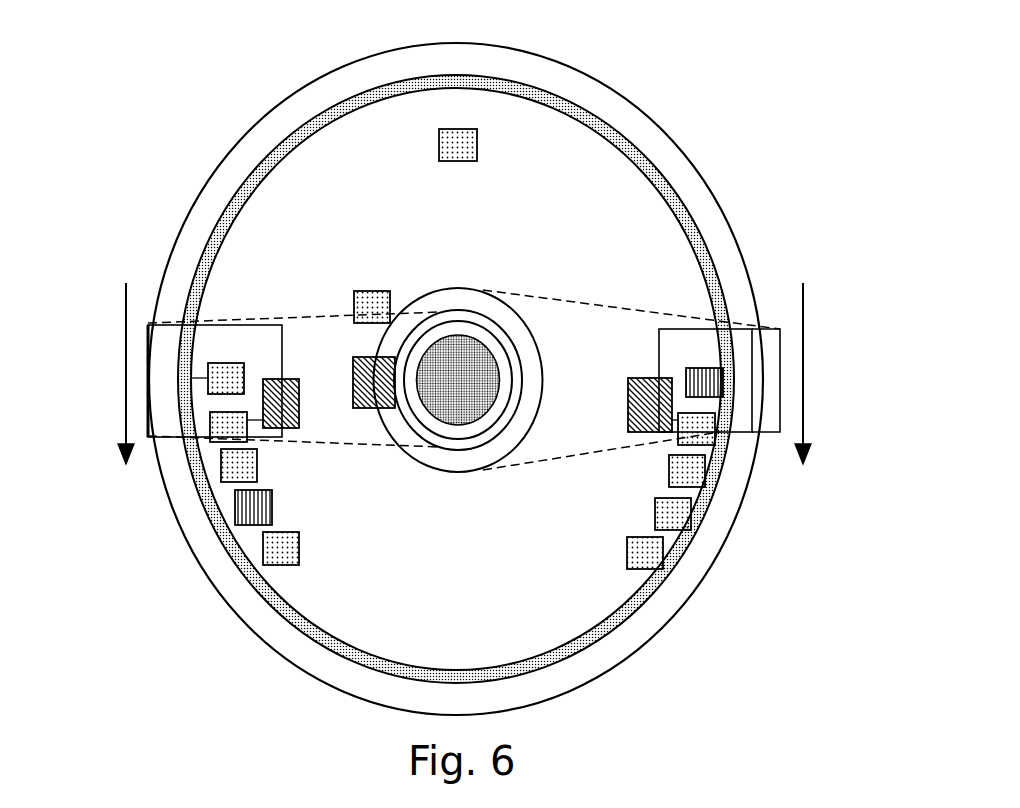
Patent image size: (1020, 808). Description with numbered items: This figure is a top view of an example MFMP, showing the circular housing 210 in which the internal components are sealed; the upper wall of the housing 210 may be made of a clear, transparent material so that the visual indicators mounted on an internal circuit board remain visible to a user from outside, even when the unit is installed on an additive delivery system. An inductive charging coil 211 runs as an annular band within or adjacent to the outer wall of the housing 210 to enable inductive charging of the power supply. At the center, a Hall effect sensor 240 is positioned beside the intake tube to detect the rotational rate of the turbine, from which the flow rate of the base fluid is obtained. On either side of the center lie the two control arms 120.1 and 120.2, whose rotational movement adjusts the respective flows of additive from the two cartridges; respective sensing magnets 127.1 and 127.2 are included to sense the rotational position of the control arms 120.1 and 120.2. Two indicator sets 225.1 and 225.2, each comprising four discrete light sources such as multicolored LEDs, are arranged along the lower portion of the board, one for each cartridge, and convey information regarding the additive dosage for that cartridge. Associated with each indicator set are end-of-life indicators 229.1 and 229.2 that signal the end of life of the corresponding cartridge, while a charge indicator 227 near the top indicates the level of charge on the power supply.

The housing 210 is at (748, 483).
The inductive charging coil 211 is at (618, 128).
The charge indicator 227 is at (462, 161).
The Hall effect sensor 240 is at (362, 408).
The control arm 120.1 is at (733, 347).
The control arm 120.2 is at (205, 352).
The sensing magnet 127.1 is at (655, 378).
The sensing magnet 127.2 is at (212, 417).
The end-of-life indicator 229.1 is at (723, 383).
The end-of-life indicator 229.2 is at (208, 378).
The indicator set 225.1 is at (627, 556).
The indicator set 225.2 is at (299, 548).